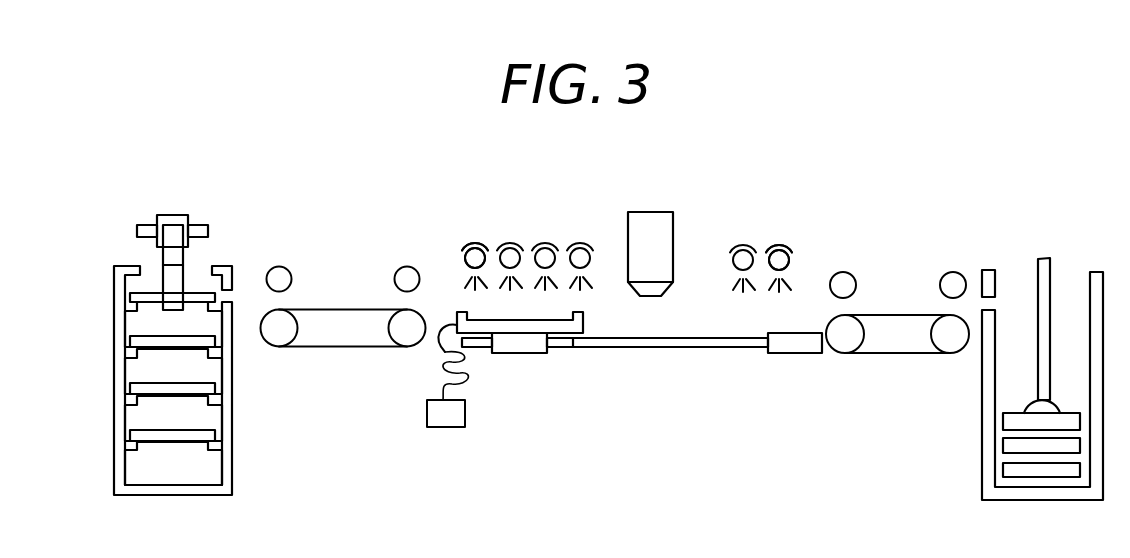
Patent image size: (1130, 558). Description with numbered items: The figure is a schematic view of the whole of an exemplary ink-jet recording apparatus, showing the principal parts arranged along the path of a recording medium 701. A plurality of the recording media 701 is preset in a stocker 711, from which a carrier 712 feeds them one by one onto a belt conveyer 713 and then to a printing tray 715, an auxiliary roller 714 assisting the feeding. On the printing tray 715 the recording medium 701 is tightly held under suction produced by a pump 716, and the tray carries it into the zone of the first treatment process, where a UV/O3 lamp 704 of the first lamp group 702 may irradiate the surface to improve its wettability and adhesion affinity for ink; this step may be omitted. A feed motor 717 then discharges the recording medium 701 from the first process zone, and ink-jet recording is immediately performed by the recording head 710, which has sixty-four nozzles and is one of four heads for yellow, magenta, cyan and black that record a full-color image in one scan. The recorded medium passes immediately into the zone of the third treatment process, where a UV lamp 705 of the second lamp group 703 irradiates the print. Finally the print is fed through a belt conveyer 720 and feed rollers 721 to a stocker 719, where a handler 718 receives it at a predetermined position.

The recording medium 701 is at (153, 293).
The first heating lamp group 702 is at (595, 212).
The second heating lamp group 703 is at (798, 210).
The UV/O3 lamp 704 is at (458, 243).
The UV lamp 705 is at (789, 243).
The recording head 710 is at (653, 212).
The stocker 711 is at (117, 408).
The carrier 712 is at (178, 215).
The belt conveyer 713 is at (352, 347).
The auxiliary roller 714 is at (395, 278).
The printing tray 715 is at (575, 334).
The pump 716 is at (465, 412).
The feed motor 717 is at (812, 352).
The handler 718 is at (1045, 288).
The stocker 719 is at (1072, 498).
The belt conveyer 720 is at (910, 355).
The feed rollers 721 is at (856, 284).